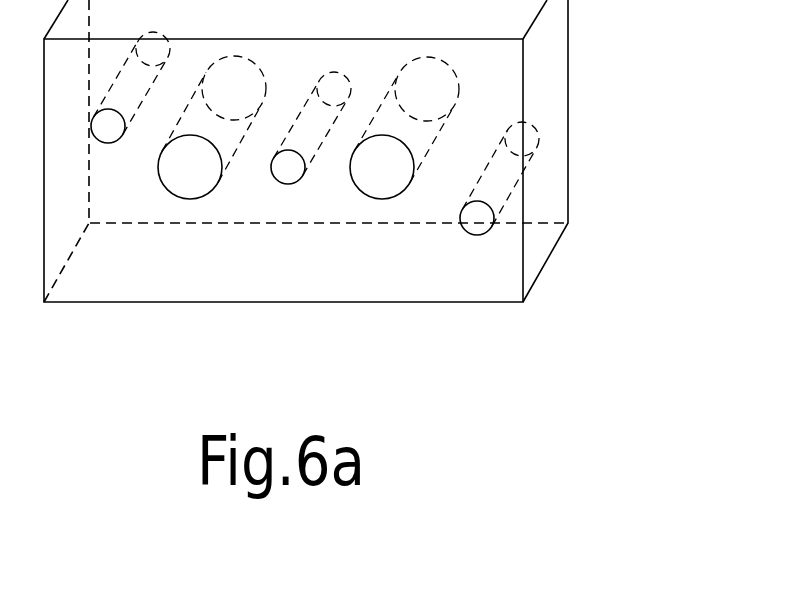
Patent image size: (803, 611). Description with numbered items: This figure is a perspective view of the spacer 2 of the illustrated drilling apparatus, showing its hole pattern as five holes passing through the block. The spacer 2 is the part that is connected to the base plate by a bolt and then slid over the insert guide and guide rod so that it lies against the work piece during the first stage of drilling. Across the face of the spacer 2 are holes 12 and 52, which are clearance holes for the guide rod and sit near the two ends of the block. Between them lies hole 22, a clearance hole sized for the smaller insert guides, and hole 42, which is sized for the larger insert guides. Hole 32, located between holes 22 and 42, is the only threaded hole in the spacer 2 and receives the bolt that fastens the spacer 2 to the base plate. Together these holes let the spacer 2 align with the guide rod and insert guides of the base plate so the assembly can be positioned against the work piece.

The spacer 2 is at (553, 118).
The clearance hole for the guide rod 12 is at (108, 130).
The clearance hole for the smaller insert guides 22 is at (190, 167).
The threaded hole for the bolt 32 is at (288, 167).
The hole for the larger insert guides 42 is at (382, 167).
The clearance hole for the guide rod 52 is at (477, 218).